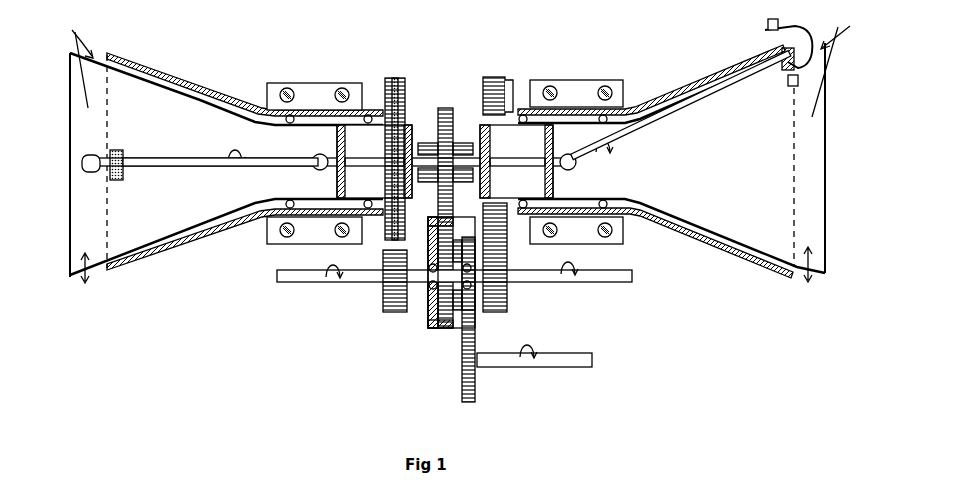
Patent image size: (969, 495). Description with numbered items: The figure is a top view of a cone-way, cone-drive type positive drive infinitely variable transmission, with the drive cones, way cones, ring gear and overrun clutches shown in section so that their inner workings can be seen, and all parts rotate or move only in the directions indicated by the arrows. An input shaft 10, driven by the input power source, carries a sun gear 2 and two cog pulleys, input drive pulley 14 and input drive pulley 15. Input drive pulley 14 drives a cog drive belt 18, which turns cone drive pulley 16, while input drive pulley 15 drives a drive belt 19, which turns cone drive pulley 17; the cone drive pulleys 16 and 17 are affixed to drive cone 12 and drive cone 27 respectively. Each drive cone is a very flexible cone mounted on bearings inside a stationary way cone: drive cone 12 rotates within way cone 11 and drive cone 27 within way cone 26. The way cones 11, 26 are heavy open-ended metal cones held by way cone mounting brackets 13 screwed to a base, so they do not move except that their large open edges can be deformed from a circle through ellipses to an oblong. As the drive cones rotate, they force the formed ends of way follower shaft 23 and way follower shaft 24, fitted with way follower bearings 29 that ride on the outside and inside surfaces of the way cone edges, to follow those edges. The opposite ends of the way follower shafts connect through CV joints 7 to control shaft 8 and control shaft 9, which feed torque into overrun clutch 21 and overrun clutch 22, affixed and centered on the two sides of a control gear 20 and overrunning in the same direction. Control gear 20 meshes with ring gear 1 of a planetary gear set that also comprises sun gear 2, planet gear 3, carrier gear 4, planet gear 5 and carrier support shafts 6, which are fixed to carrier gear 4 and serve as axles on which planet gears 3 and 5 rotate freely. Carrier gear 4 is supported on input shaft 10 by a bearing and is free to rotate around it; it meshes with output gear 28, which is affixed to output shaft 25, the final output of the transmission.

The ring gear 1 is at (450, 337).
The sun gear 2 is at (428, 300).
The planet gear 3 is at (433, 330).
The carrier gear 4 is at (475, 292).
The planet gear 5 is at (440, 232).
The carrier support shaft 6 is at (458, 240).
The CV joint 7 is at (312, 165).
The control shaft 8 is at (375, 165).
The control shaft 9 is at (495, 165).
The input shaft 10 is at (297, 278).
The way cone 11 is at (150, 64).
The drive cone 12 is at (90, 52).
The way cone mounting bracket 13 is at (305, 90).
The input drive pulley 14 is at (383, 297).
The input drive pulley 15 is at (510, 300).
The cone drive pulley 16 is at (383, 90).
The cone drive pulley 17 is at (510, 100).
The drive belt 18 is at (395, 86).
The drive belt 19 is at (500, 76).
The control gear 20 is at (445, 106).
The overrun clutch 21 is at (428, 140).
The overrun clutch 22 is at (462, 140).
The way follower shaft 23 is at (198, 160).
The way follower shaft 24 is at (660, 125).
The output shaft 25 is at (552, 365).
The way cone 26 is at (700, 76).
The drive cone 27 is at (720, 222).
The output gear 28 is at (478, 390).
The way follower bearing 29 is at (114, 182).